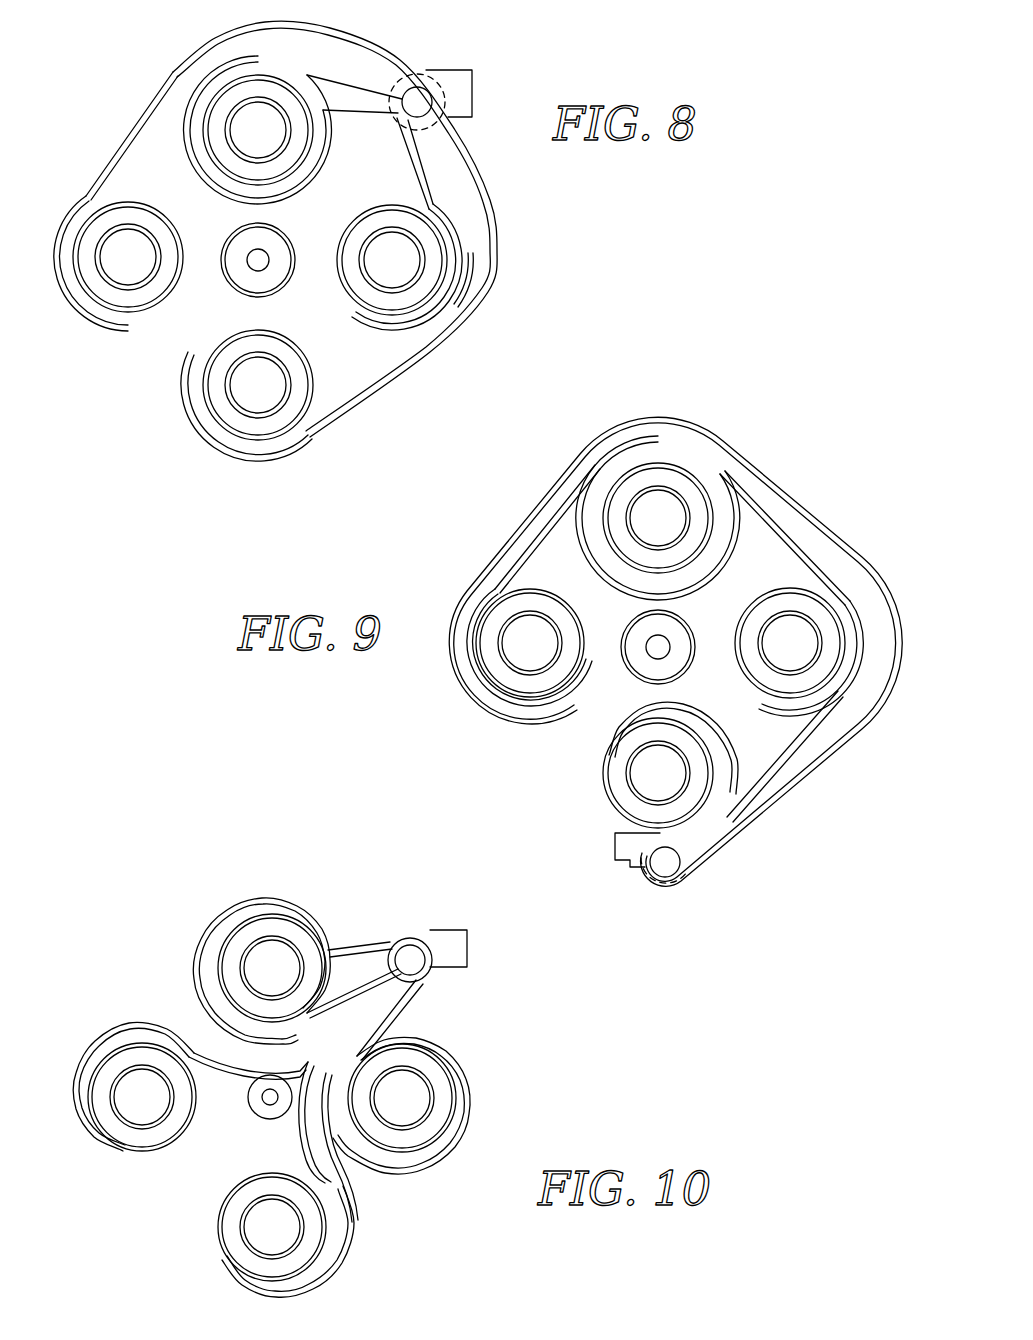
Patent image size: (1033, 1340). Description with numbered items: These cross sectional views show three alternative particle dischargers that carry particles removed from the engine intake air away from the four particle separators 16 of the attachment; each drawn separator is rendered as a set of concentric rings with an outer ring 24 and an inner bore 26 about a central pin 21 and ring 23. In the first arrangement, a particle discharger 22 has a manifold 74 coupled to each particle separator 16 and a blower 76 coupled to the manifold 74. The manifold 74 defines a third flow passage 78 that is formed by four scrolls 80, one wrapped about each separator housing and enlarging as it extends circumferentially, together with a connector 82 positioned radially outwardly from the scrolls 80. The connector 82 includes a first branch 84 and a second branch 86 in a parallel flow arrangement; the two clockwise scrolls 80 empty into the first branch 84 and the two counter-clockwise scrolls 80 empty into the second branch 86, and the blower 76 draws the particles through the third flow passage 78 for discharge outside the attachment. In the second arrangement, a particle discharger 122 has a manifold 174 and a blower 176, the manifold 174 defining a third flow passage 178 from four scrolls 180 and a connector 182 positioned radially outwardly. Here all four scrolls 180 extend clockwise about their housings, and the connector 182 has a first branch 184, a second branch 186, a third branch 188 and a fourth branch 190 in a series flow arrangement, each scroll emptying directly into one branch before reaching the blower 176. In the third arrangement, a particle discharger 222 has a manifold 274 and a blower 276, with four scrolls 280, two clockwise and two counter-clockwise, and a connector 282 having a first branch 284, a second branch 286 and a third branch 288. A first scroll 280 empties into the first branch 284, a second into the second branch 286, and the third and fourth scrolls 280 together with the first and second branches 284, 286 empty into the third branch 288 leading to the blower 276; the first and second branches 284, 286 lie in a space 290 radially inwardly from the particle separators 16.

In FIG. 8, the particle separator 16 is at (306, 304).
In FIG. 9, the particle separator 16 is at (639, 616).
In FIG. 10, the particle separator 16 is at (282, 1090).
In FIG. 8, the central pin 21 is at (250, 258).
In FIG. 9, the central pin 21 is at (666, 652).
In FIG. 10, the central pin 21 is at (266, 1106).
In FIG. 8, the particle discharger 22 is at (105, 80).
In FIG. 8, the central ring 23 is at (284, 242).
In FIG. 9, the central ring 23 is at (692, 638).
In FIG. 10, the central ring 23 is at (274, 1120).
In FIG. 8, the outer bushing ring 24 is at (278, 88).
In FIG. 9, the outer bushing ring 24 is at (628, 458).
In FIG. 10, the outer bushing ring 24 is at (222, 1005).
In FIG. 8, the inner bushing bore 26 is at (445, 220).
In FIG. 9, the inner bushing bore 26 is at (625, 508).
In FIG. 10, the inner bushing bore 26 is at (242, 970).
In FIG. 8, the manifold 74 is at (378, 44).
In FIG. 8, the blower 76 is at (453, 72).
In FIG. 8, the third flow passage 78 is at (290, 42).
In FIG. 8, the scroll 80 is at (335, 112).
In FIG. 8, the connector 82 is at (172, 70).
In FIG. 8, the first branch 84 is at (118, 152).
In FIG. 8, the second branch 86 is at (362, 405).
In FIG. 9, the particle discharger 122 is at (747, 402).
In FIG. 9, the manifold 174 is at (832, 508).
In FIG. 9, the blower 176 is at (624, 870).
In FIG. 9, the third flow passage 178 is at (787, 806).
In FIG. 9, the scroll 180 is at (778, 570).
In FIG. 9, the connector 182 is at (870, 565).
In FIG. 9, the first branch 184 is at (508, 562).
In FIG. 9, the second branch 186 is at (752, 462).
In FIG. 9, the third branch 188 is at (832, 800).
In FIG. 9, the fourth branch 190 is at (704, 880).
In FIG. 10, the particle discharger 222 is at (122, 917).
In FIG. 10, the manifold 274 is at (357, 1262).
In FIG. 10, the blower 276 is at (430, 936).
In FIG. 10, the scroll 280 is at (250, 900).
In FIG. 10, the connector 282 is at (234, 1090).
In FIG. 10, the first branch 284 is at (252, 1074).
In FIG. 10, the second branch 286 is at (362, 1182).
In FIG. 10, the third branch 288 is at (354, 981).
In FIG. 10, the space 290 is at (305, 1068).